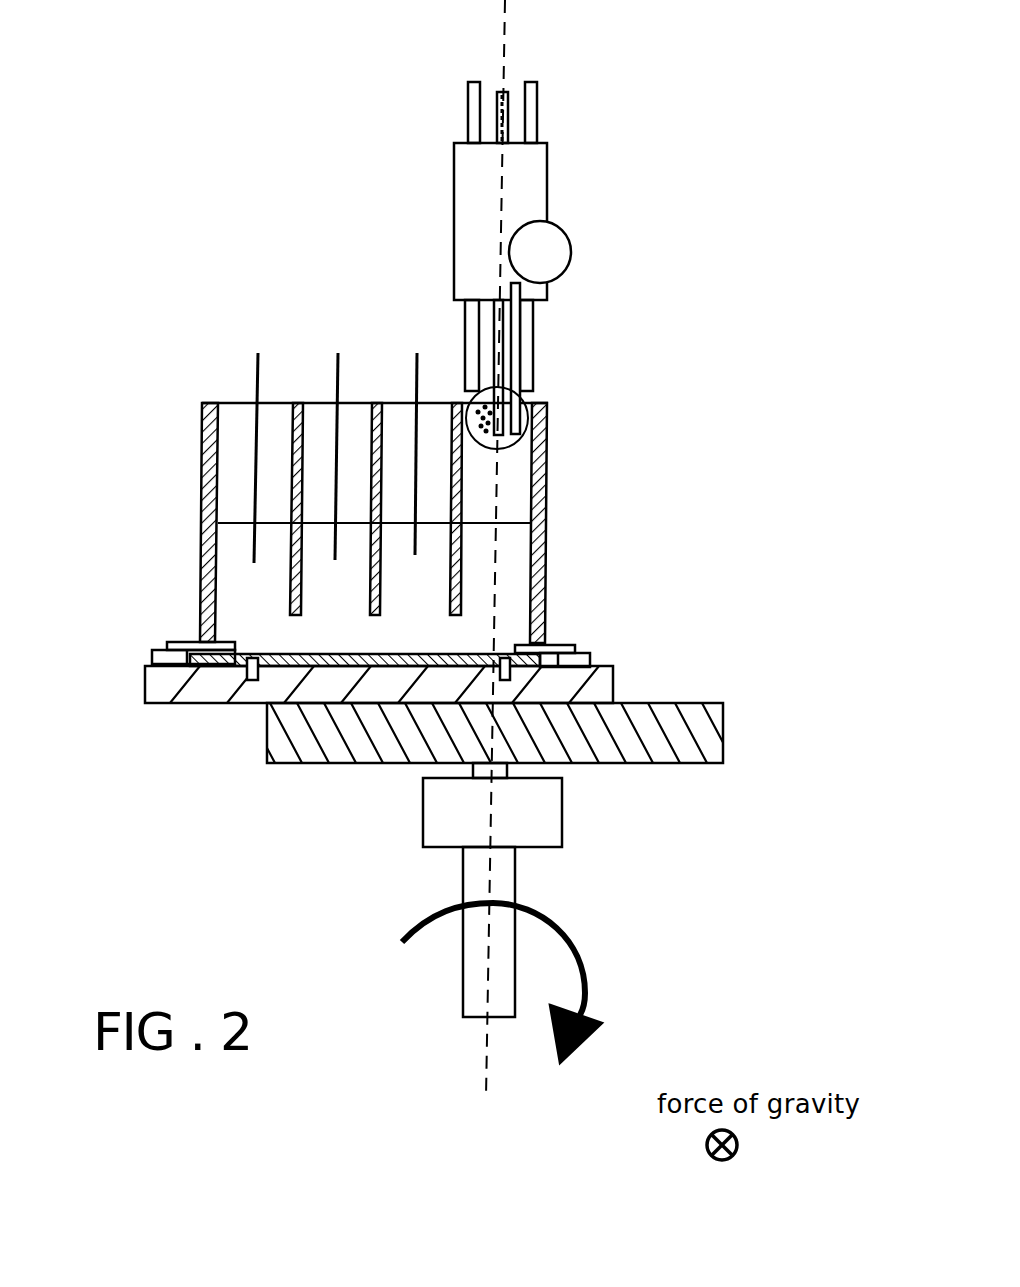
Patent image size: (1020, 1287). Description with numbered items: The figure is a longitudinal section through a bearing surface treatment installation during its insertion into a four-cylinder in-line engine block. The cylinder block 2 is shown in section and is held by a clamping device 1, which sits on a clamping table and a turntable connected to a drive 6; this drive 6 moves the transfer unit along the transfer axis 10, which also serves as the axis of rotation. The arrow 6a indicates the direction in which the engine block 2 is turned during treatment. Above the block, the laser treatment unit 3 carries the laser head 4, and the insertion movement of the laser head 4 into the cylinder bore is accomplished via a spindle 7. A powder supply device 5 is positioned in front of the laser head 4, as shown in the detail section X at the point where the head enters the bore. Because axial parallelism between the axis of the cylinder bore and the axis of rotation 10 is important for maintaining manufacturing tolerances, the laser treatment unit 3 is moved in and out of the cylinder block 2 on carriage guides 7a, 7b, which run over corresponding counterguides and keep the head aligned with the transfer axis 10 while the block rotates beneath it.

The clamping device 1 is at (170, 683).
The cylinder block 2 is at (198, 567).
The laser treatment unit 3 is at (478, 187).
The laser head 4 is at (490, 370).
The powder supply device 5 is at (537, 252).
The drive 6 is at (477, 908).
The arrow 6a is at (582, 950).
The spindle 7 is at (468, 117).
The carriage guide 7a is at (532, 108).
The carriage guide 7b is at (528, 340).
The transfer axis 10 is at (500, 496).
The section X is at (530, 403).